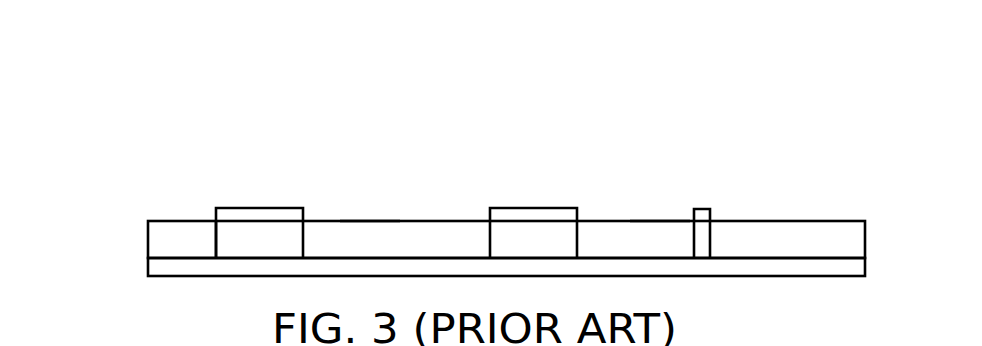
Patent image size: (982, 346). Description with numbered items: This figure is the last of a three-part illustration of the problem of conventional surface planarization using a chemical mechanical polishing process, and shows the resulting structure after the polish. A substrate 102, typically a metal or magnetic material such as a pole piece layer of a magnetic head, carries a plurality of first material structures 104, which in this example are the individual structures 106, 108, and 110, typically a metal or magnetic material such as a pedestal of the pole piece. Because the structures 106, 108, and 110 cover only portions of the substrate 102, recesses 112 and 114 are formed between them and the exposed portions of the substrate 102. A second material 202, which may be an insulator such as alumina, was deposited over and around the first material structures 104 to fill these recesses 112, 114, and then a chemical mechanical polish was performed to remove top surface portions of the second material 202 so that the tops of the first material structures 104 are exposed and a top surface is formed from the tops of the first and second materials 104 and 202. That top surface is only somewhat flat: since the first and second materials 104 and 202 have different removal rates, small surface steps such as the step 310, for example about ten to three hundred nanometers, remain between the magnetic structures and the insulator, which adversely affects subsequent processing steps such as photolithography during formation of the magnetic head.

The substrate 102 is at (148, 263).
The second material 202 is at (148, 240).
The first material structures 104 is at (212, 112).
The structure 106 is at (243, 208).
The structure 108 is at (505, 208).
The structure 110 is at (700, 210).
The recess 112 is at (360, 233).
The recess 114 is at (662, 235).
The step 310 is at (215, 220).